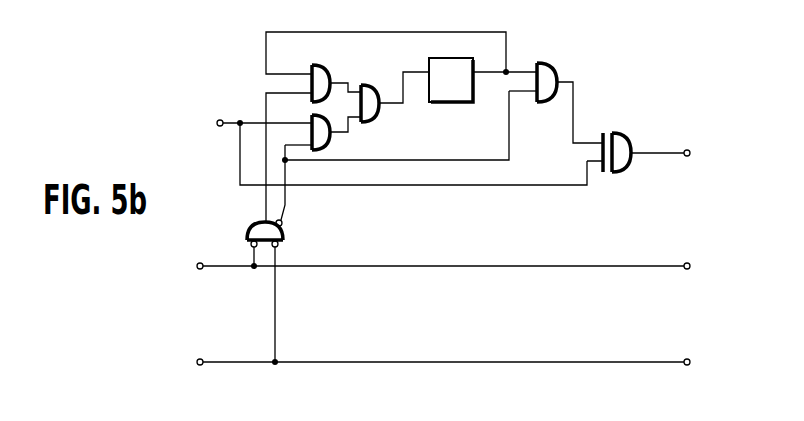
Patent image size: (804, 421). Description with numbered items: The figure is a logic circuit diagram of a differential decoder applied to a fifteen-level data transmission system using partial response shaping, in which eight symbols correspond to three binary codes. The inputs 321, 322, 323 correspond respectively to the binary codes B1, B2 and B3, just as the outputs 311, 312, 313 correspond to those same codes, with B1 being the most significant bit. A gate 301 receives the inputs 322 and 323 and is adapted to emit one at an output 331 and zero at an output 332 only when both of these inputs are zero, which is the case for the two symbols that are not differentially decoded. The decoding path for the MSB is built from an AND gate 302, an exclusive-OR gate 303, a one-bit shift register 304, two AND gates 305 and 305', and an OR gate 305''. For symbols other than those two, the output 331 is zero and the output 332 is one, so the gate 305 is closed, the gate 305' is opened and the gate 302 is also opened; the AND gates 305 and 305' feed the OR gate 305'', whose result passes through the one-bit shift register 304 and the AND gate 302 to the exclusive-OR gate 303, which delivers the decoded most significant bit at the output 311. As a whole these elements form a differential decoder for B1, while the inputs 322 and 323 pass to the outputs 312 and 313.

The gate 301 is at (286, 236).
The AND gate 302 is at (550, 66).
The exclusive-OR gate 303 is at (617, 133).
The one-bit shift register 304 is at (456, 103).
The AND gate 305 is at (336, 73).
The AND gate 305' is at (331, 133).
The OR gate 305'' is at (395, 86).
The output 311 is at (673, 154).
The output 312 is at (699, 266).
The output 313 is at (699, 362).
The input 321 is at (252, 122).
The input 322 is at (426, 265).
The input 323 is at (426, 362).
The output 331 is at (266, 210).
The output 332 is at (437, 159).